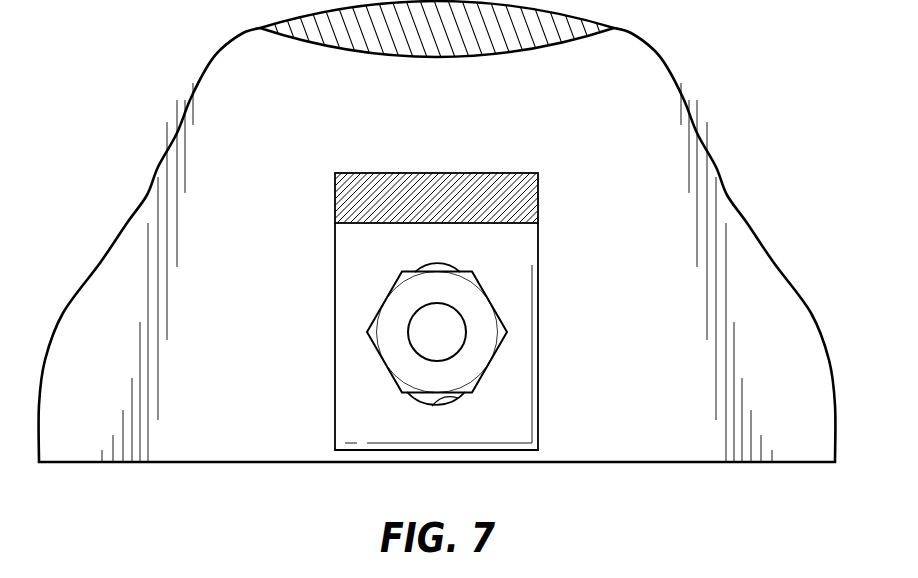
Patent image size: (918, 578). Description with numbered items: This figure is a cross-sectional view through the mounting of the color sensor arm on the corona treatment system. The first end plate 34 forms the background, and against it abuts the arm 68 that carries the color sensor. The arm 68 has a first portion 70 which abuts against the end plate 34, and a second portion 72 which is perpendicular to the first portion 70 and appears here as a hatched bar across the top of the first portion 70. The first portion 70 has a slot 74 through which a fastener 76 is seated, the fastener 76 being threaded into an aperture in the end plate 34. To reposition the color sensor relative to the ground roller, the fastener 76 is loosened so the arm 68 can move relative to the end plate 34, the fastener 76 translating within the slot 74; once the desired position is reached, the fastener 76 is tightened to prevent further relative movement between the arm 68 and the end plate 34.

The first end plate 34 is at (653, 428).
The arm 68 is at (452, 312).
The first portion 70 is at (512, 282).
The second portion 72 is at (463, 172).
The slot 74 is at (452, 400).
The fastener 76 is at (447, 325).